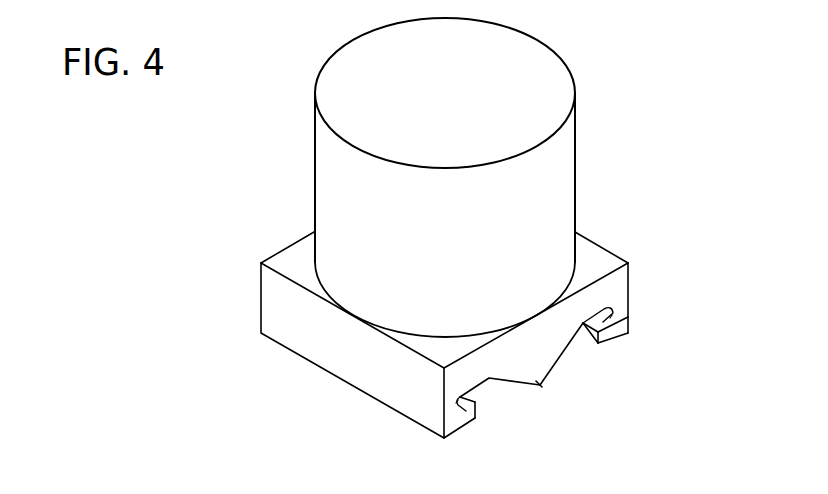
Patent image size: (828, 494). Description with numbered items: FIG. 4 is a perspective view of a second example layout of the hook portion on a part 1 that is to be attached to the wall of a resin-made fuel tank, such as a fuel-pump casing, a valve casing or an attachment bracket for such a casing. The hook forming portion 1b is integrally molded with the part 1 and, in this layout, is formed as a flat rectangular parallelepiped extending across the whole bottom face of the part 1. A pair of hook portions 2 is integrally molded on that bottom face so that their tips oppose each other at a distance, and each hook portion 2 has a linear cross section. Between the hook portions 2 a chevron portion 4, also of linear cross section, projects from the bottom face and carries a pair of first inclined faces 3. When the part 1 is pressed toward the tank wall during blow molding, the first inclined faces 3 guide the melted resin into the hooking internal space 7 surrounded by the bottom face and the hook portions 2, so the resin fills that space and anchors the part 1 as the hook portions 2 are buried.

The part 1 is at (560, 160).
The hook forming portion 1b is at (600, 240).
The hook portion 2 is at (470, 418).
The first inclined face 3 is at (515, 385).
The chevron portion 4 is at (538, 379).
The hooking internal space 7 is at (457, 402).